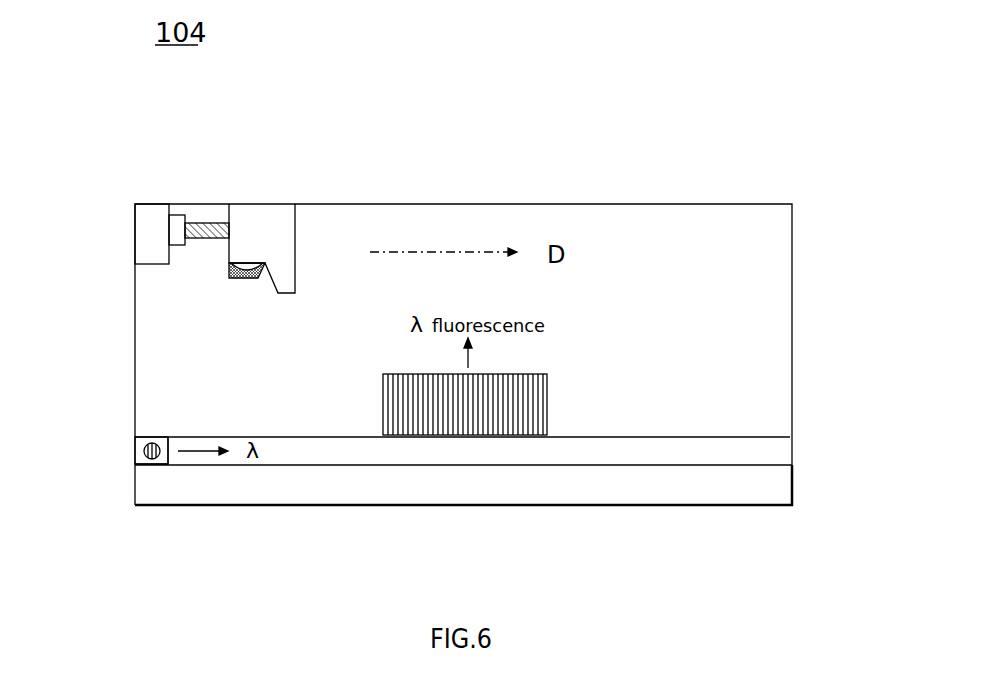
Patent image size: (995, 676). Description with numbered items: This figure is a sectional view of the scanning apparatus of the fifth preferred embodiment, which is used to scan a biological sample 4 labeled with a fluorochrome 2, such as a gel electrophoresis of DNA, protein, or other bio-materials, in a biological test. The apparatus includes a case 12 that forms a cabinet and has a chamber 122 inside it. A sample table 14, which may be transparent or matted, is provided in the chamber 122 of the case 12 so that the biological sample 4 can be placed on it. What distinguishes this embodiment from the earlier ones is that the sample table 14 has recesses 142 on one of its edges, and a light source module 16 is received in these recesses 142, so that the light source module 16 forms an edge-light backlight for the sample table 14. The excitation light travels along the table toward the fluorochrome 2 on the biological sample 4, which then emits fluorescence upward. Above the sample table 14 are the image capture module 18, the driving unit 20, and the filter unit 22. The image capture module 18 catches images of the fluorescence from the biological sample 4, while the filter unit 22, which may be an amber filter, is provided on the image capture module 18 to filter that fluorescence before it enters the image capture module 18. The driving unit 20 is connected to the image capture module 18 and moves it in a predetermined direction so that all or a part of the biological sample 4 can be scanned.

The case 12 is at (792, 400).
The chamber 122 is at (765, 476).
The sample table 14 is at (655, 437).
The recesses 142 is at (150, 466).
The light source module 16 is at (145, 445).
The fluorochrome 2 is at (398, 406).
The biological sample 4 is at (548, 411).
The driving unit 20 is at (210, 222).
The image capture module 18 is at (255, 268).
The filter unit 22 is at (229, 272).